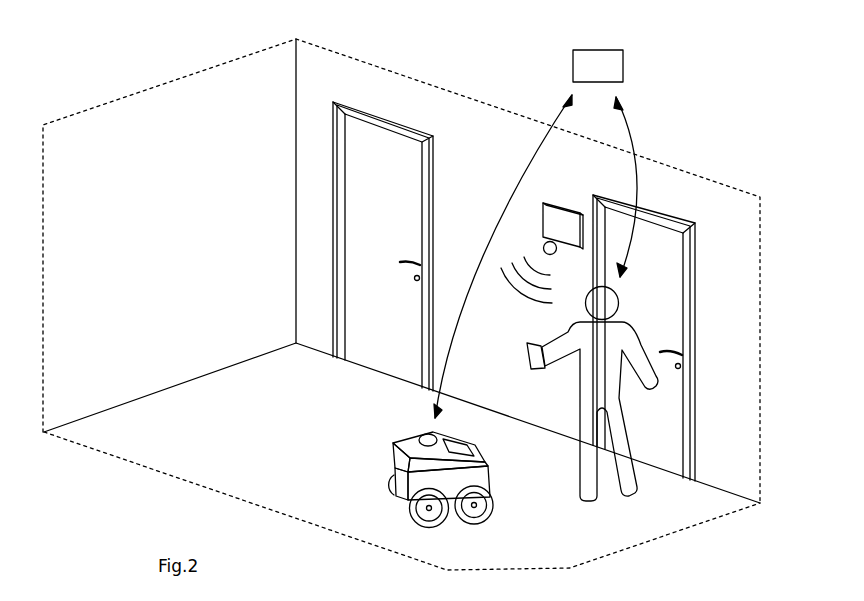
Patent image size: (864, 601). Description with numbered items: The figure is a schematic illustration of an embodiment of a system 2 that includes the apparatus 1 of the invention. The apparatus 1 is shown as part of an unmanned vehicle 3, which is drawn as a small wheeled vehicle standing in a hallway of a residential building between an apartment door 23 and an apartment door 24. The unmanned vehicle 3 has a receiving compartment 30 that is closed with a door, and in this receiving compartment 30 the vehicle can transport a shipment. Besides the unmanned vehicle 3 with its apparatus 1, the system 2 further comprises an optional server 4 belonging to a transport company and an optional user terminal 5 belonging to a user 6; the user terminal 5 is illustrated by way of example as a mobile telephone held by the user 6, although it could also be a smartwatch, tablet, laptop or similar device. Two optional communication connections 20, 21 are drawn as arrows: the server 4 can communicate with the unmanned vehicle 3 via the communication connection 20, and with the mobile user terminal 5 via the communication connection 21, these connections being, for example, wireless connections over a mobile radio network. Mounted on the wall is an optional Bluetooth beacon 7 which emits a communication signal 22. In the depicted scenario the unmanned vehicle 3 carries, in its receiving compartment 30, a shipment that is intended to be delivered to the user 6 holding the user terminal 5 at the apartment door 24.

The apparatus 1 is at (440, 471).
The system 2 is at (781, 100).
The unmanned vehicle 3 is at (395, 466).
The receiving compartment 30 is at (482, 456).
The server 4 is at (603, 75).
The user terminal 5 is at (541, 372).
The user 6 is at (606, 362).
The Bluetooth beacon 7 is at (567, 234).
The communication connection 20 is at (529, 162).
The communication connection 21 is at (633, 138).
The communication signal 22 is at (517, 299).
The apartment door 23 is at (391, 184).
The apartment door 24 is at (658, 273).